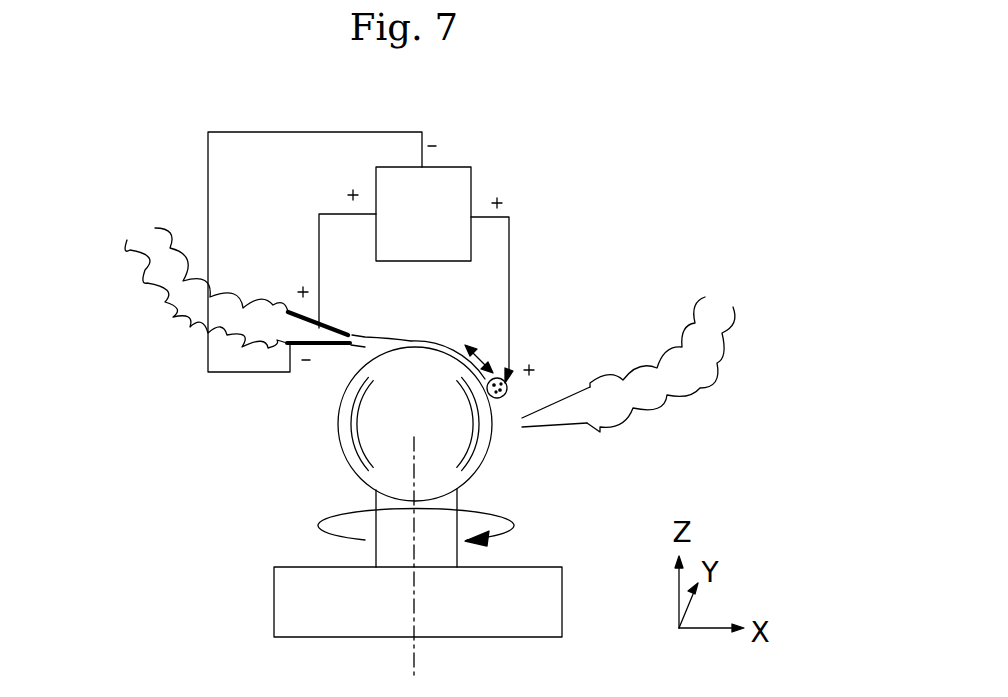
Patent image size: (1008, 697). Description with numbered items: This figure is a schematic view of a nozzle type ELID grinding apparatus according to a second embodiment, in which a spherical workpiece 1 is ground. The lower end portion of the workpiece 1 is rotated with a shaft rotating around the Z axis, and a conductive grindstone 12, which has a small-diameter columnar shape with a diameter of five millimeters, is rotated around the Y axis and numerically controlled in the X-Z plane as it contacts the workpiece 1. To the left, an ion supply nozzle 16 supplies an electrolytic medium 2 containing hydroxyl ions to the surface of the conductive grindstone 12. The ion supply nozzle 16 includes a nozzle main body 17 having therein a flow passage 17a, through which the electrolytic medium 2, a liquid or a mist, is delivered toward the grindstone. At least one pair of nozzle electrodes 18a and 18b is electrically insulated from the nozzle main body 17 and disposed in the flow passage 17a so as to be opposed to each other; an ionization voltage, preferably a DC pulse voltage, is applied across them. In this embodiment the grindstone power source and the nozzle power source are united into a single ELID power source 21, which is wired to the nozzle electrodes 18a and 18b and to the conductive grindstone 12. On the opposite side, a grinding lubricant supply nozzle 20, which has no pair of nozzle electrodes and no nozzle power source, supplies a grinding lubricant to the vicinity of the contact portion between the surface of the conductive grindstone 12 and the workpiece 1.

The workpiece 1 is at (373, 427).
The electrolytic medium 2 is at (410, 340).
The conductive grindstone 12 is at (500, 398).
The ion supply nozzle 16 is at (227, 333).
The nozzle main body 17 is at (173, 290).
The flow passage 17a is at (182, 310).
The nozzle electrode 18a is at (343, 327).
The nozzle electrode 18b is at (323, 345).
The grinding lubricant supply nozzle 20 is at (668, 414).
The ELID power source 21 is at (458, 187).